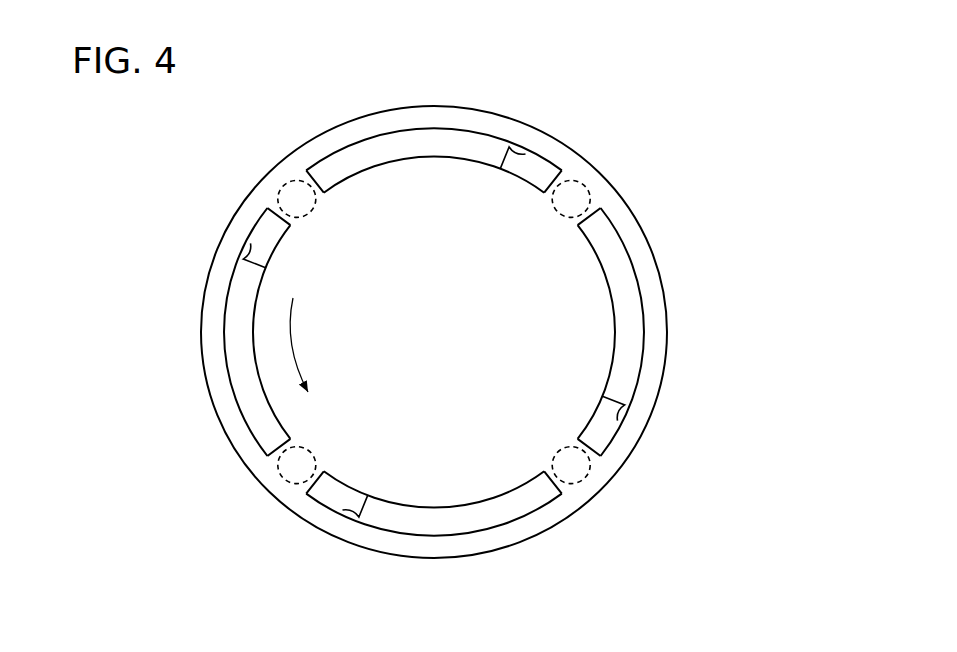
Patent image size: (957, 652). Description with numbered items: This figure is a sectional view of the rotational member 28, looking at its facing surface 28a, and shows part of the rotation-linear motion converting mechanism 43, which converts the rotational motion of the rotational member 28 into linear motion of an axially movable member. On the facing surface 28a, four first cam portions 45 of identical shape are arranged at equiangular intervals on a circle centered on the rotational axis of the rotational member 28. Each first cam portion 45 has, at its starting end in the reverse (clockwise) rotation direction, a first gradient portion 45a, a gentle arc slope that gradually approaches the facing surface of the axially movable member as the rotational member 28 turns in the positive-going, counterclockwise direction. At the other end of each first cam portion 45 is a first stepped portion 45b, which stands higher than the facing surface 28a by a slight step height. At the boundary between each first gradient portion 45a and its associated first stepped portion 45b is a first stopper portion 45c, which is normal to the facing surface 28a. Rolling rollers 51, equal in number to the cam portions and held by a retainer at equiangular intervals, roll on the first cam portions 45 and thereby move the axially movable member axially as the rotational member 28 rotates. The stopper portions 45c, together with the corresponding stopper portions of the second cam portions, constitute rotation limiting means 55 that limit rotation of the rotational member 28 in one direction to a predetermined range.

The rotational member 28 is at (400, 104).
The facing surface 28a is at (636, 213).
The rotation-linear motion converting mechanism 43 is at (647, 364).
The first cam portion 45 is at (457, 128).
The first gradient portion 45a is at (352, 150).
The first stepped portion 45b is at (566, 165).
The first stopper portion 45c is at (534, 147).
The rolling roller 51 is at (289, 181).
The rotation limiting means 55 is at (276, 265).